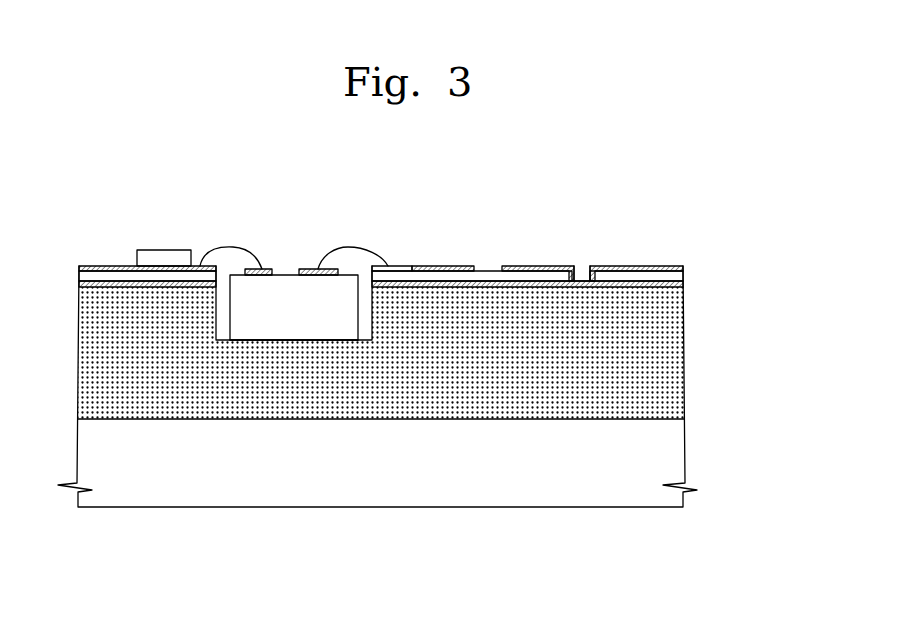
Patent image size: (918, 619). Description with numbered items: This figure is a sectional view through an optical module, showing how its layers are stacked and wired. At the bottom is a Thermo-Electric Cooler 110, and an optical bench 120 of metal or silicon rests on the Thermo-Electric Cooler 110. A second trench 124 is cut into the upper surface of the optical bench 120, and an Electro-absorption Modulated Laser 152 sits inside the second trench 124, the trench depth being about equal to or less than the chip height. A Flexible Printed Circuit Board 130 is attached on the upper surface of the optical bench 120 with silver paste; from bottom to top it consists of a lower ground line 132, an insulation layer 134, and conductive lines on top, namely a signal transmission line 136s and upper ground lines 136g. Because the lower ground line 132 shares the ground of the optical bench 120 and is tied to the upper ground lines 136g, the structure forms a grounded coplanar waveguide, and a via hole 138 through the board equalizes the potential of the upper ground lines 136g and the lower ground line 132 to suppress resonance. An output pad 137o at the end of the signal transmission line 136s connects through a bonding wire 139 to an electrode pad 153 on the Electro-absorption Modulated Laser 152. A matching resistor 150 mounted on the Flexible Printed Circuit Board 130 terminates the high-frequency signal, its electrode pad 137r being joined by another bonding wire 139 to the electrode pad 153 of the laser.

The Thermo-Electric Cooler 110 is at (684, 462).
The optical bench 120 is at (684, 358).
The second trench 124 is at (362, 299).
The Flexible Printed Circuit Board 130 is at (72, 266).
The lower ground line 132 is at (684, 287).
The insulation layer 134 is at (684, 276).
The upper ground line 136g is at (529, 265).
The signal transmission line 136s is at (446, 265).
The output pad 137o is at (397, 264).
The electrode pad for matching resistor 137r is at (202, 262).
The via hole 138 is at (583, 262).
The bonding wire 139 is at (343, 246).
The matching resistor 150 is at (167, 248).
The Electro-absorption Modulated Laser 152 is at (305, 333).
The electrode pad for the EML 153 is at (303, 268).